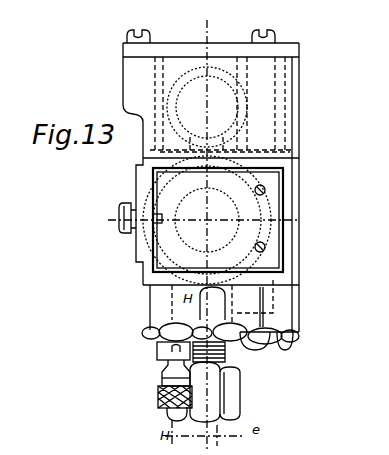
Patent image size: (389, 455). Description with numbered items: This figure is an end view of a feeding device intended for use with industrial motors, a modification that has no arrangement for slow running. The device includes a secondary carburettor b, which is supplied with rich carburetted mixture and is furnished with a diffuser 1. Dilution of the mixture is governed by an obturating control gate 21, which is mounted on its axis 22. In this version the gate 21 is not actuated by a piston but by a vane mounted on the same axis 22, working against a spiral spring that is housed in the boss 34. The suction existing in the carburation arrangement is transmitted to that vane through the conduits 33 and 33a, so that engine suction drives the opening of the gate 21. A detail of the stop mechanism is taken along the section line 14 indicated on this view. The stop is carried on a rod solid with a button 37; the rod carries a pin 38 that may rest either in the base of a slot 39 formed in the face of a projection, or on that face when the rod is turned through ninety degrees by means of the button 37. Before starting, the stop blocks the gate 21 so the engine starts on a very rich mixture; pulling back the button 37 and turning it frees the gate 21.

The conduit 33a is at (208, 76).
The axis 22 is at (273, 113).
The conduit 33 is at (190, 139).
The obturating control gate 21 is at (273, 198).
The diffuser 1 is at (177, 237).
The section line 14— 14 is at (120, 218).
The secondary carburettor b is at (287, 228).
The boss 34 is at (287, 308).
The pin 38 is at (163, 348).
The slot 39 is at (162, 357).
The button 37 is at (163, 402).